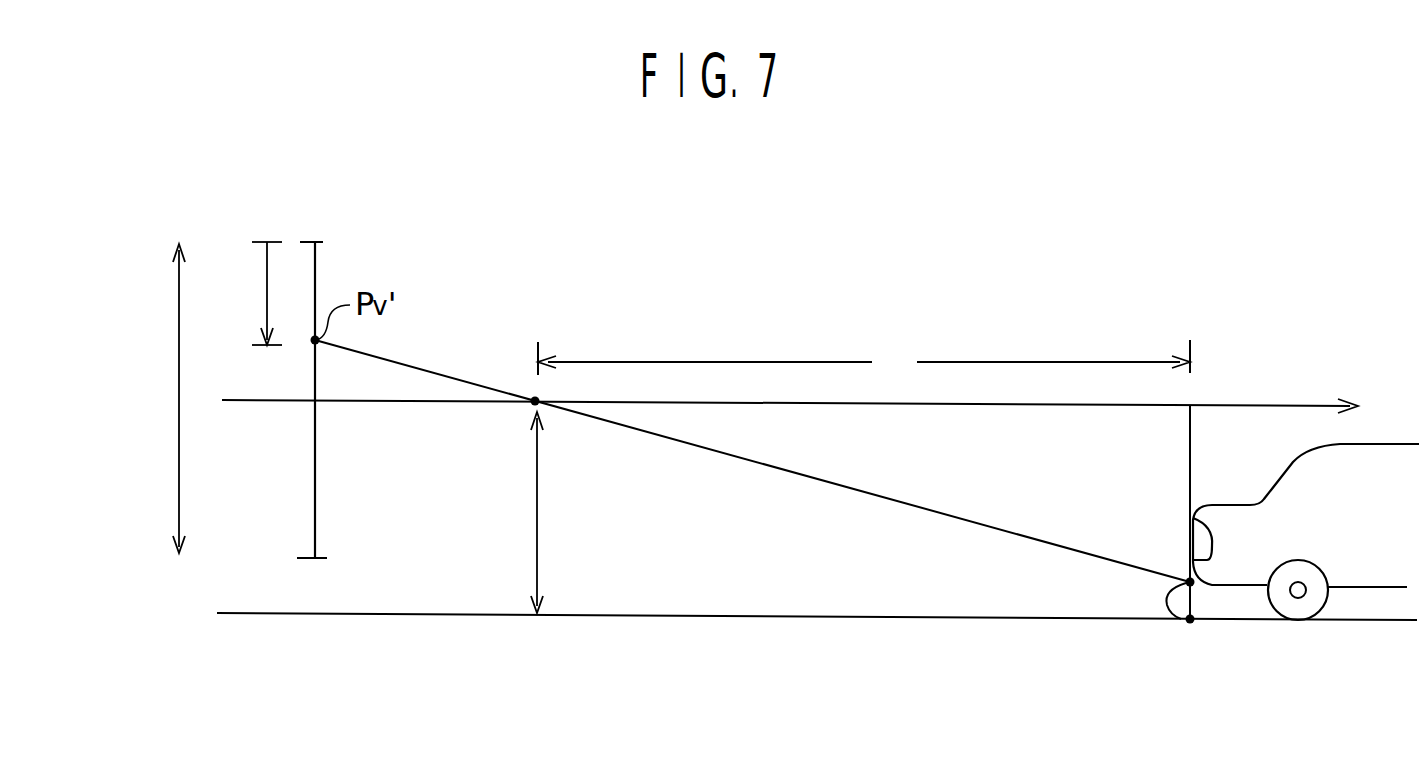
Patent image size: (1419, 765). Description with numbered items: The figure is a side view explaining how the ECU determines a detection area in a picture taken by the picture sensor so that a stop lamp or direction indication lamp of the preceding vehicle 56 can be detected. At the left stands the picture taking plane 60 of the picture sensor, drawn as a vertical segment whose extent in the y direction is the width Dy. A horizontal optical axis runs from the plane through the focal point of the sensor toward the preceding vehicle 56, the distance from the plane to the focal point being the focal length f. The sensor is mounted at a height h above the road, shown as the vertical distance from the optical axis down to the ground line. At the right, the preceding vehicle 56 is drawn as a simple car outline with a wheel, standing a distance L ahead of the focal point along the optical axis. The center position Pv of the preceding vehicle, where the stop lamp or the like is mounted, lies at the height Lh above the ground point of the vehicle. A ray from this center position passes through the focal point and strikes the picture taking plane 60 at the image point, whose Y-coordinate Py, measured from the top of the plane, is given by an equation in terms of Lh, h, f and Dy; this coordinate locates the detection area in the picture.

The preceding vehicle 56 is at (1272, 496).
The picture taking plane 60 is at (316, 283).
The center position of the preceding vehicle Pv is at (1205, 601).
The height of a mounting position of a stop lamp Lh is at (1148, 596).
The distance to the preceding vehicle L is at (864, 356).
The height of a mounting position of the picture sensor h is at (552, 512).
The focal length of the picture sensor f is at (467, 422).
The width in the y direction of the picture taking plane Dy is at (151, 398).
The Y-coordinate of the center position of the preceding vehicle Py is at (254, 293).